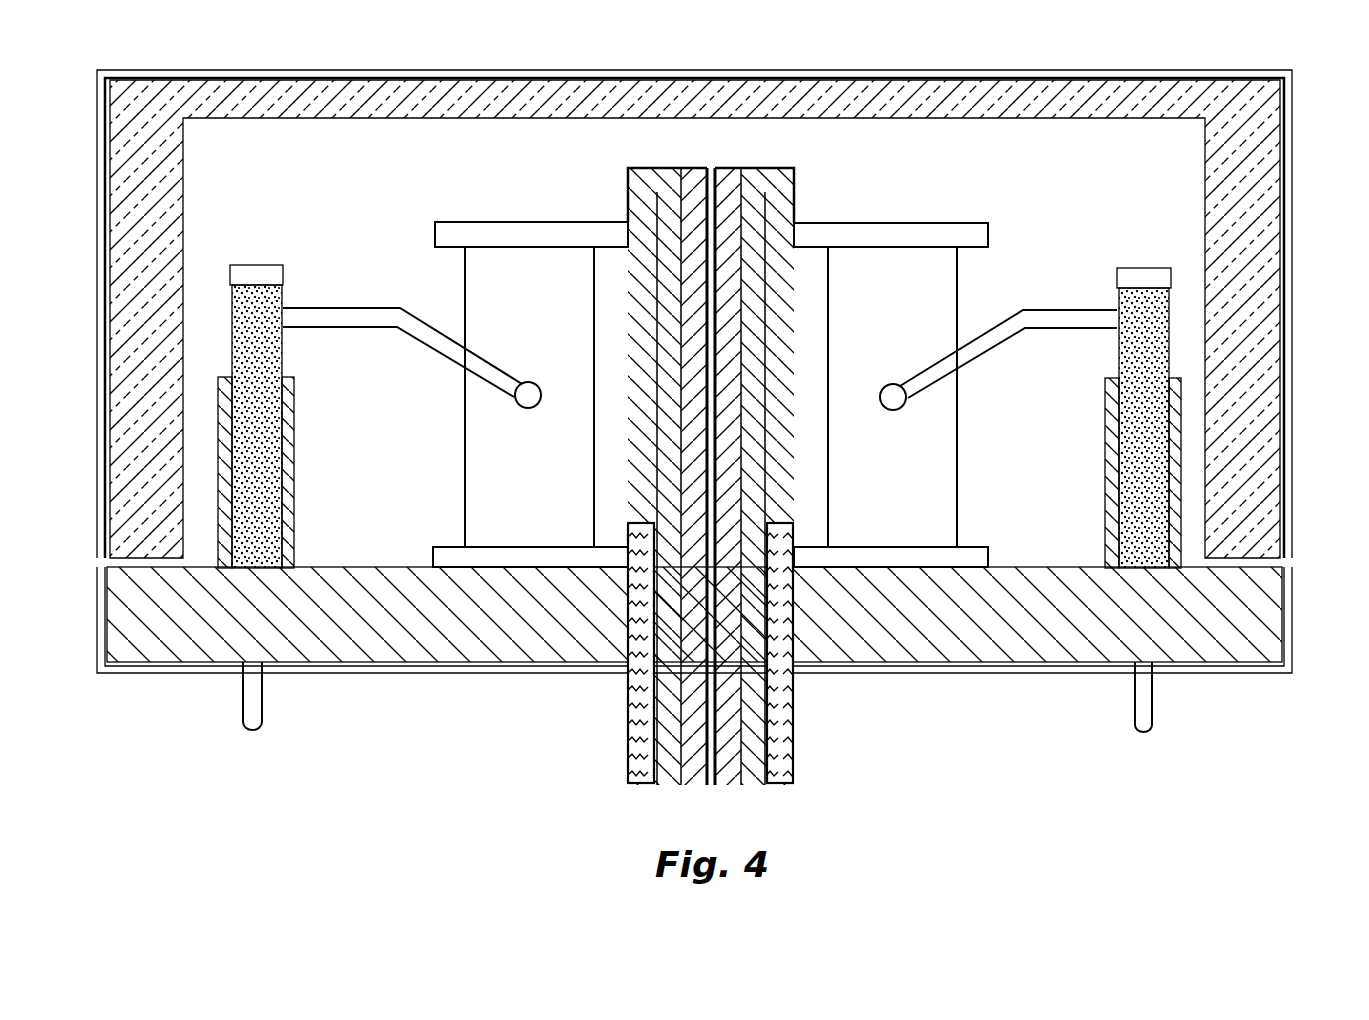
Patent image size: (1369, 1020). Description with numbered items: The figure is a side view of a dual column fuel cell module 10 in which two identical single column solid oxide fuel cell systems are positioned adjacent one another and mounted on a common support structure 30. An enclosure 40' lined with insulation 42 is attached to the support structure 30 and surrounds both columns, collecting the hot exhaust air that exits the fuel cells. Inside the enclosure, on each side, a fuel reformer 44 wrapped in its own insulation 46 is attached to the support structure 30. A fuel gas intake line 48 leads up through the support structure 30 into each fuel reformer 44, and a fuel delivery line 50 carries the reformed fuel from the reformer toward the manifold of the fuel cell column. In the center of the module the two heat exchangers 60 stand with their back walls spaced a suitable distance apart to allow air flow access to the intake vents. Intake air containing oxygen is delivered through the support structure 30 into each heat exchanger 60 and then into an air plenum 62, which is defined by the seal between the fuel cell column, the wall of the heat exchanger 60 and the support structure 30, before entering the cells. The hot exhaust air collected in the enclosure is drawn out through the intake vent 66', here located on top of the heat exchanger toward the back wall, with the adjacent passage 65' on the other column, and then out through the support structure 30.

The SOFC module 10 is at (732, 393).
The support structure 30 is at (1288, 592).
The enclosure 40' is at (732, 314).
The insulation 42 is at (380, 120).
The fuel reformer 44 is at (257, 265).
The insulation 46 is at (295, 420).
The fuel gas intake line 48 is at (262, 708).
The fuel delivery line 50 is at (362, 308).
The heat exchanger 60 is at (592, 191).
The air plenum 62 is at (629, 399).
The inner tube 65' is at (757, 457).
The intake vent 66' is at (667, 457).